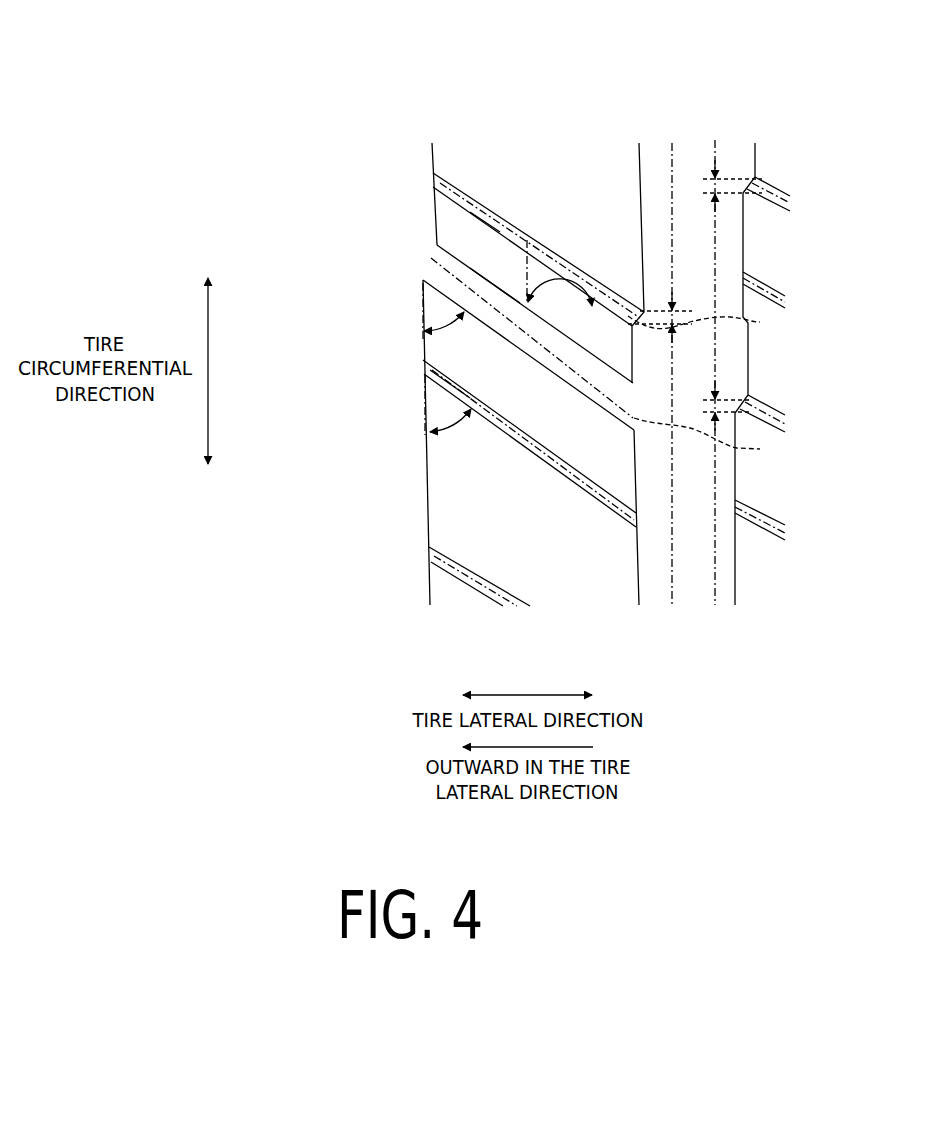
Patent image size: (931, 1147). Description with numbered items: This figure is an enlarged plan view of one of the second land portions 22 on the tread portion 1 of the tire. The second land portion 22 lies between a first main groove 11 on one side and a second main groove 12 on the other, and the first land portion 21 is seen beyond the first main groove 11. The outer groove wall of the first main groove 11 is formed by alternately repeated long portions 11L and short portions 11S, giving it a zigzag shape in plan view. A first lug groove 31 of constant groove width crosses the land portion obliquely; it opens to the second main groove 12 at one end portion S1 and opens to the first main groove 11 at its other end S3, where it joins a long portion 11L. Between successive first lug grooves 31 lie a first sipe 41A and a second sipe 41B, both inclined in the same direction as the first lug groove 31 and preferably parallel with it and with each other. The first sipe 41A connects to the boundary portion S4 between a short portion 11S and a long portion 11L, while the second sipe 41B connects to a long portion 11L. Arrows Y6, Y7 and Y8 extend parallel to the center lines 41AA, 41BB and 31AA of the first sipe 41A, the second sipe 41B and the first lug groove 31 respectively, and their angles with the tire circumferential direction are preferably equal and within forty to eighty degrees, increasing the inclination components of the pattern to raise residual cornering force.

The tread portion 1 is at (744, 41).
The first main groove 11 is at (678, 155).
The long portion 11L is at (667, 186).
The short portion 11S is at (666, 306).
The second main groove 12 is at (424, 146).
The first land portion 21 is at (773, 158).
The second land portion 22 is at (624, 157).
The first lug groove 31 is at (453, 250).
The center line 31AA is at (493, 300).
The first sipe 41A is at (530, 237).
The center line 41AA is at (480, 217).
The second sipe 41B is at (428, 445).
The center line 41BB is at (470, 428).
The sipe in shoulder land portion S1 is at (431, 258).
The end portion S3 is at (710, 439).
The boundary portion S4 is at (707, 324).
The arrow Y6 is at (556, 274).
The arrow Y7 is at (420, 393).
The arrow Y8 is at (420, 293).